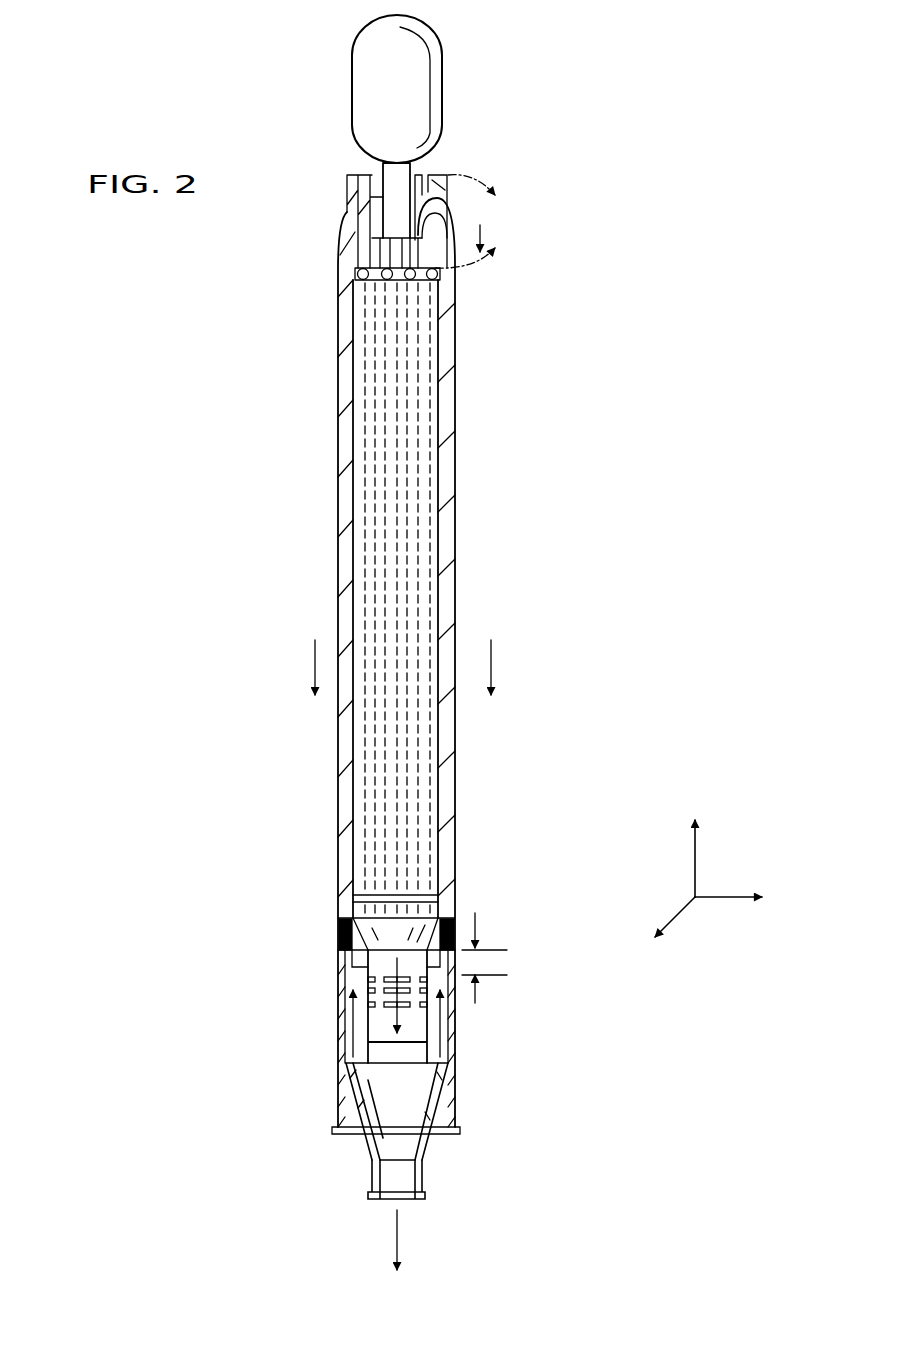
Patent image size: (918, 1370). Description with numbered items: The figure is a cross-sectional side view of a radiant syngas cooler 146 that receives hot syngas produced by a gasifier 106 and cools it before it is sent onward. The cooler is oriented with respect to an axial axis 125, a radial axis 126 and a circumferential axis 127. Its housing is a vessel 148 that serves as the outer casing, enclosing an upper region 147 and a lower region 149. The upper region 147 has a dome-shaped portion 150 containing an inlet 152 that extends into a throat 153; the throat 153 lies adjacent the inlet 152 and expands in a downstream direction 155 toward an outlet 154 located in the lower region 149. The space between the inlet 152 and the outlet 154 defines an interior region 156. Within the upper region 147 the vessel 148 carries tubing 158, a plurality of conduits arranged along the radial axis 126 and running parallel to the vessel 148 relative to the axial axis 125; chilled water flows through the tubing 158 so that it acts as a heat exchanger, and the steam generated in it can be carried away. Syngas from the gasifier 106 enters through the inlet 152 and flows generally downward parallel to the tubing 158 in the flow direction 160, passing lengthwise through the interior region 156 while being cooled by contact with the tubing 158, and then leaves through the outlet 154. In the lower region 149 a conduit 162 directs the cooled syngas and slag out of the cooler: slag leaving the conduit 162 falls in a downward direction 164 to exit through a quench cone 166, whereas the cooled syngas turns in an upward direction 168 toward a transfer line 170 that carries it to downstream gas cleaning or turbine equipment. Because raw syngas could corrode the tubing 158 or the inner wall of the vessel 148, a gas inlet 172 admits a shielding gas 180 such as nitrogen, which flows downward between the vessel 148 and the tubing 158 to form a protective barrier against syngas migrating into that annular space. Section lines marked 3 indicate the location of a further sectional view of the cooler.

The gasifier 106 is at (438, 30).
The inlet 152 is at (398, 187).
The gas inlet 172 is at (333, 210).
The dome-shaped portion 150 is at (328, 226).
The throat 153 is at (460, 222).
The downstream direction 155 is at (497, 247).
The section line 3 is at (476, 220).
The shielding gas 180 is at (330, 248).
The radiant syngas cooler 146 is at (330, 390).
The vessel 148 is at (447, 382).
The upper region 147 is at (475, 332).
The interior region 156 is at (430, 470).
The tubing 158 is at (370, 485).
The flow direction 160 is at (313, 663).
The lower region 149 is at (337, 947).
The conduit 162 is at (370, 978).
The upward direction 168 is at (352, 1045).
The transfer line 170 is at (476, 925).
The quench cone 166 is at (420, 1143).
The outlet 154 is at (390, 1182).
The downward direction 164 is at (398, 1232).
The axial axis 125 is at (697, 850).
The radial axis 126 is at (730, 900).
The circumferential axis 127 is at (677, 917).